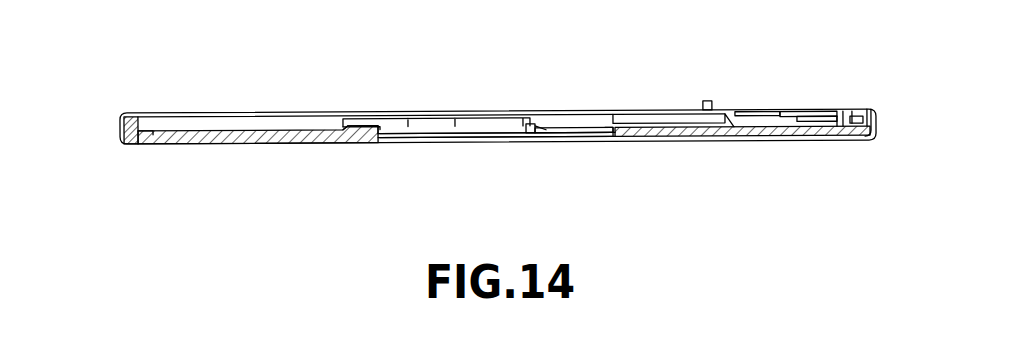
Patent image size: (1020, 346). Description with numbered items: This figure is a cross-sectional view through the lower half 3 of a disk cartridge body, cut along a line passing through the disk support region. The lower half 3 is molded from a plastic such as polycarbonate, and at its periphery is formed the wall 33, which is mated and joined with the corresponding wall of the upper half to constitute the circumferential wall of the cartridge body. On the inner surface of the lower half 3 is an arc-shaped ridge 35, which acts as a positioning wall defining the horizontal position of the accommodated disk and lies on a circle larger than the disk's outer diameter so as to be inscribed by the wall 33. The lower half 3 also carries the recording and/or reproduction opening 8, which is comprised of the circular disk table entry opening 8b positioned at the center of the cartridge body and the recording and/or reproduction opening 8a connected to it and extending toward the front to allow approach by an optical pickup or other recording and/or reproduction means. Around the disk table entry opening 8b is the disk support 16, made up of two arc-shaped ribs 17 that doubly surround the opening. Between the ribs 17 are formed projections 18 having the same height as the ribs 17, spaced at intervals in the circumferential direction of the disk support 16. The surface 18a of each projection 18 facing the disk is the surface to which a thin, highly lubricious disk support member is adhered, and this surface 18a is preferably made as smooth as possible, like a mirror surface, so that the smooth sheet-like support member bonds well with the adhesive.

The lower half 3 is at (688, 146).
The wall 33 is at (122, 140).
The disk support 16 is at (484, 118).
The arc-shaped rib 17 is at (543, 123).
The projection 18 is at (373, 130).
The surface of projection 18a is at (368, 119).
The recording and/or reproduction opening 8 is at (557, 134).
The recording and/or reproduction opening 8a is at (612, 137).
The circular disk table entry opening 8b is at (462, 137).
The arc-shaped ridge 35 is at (742, 104).